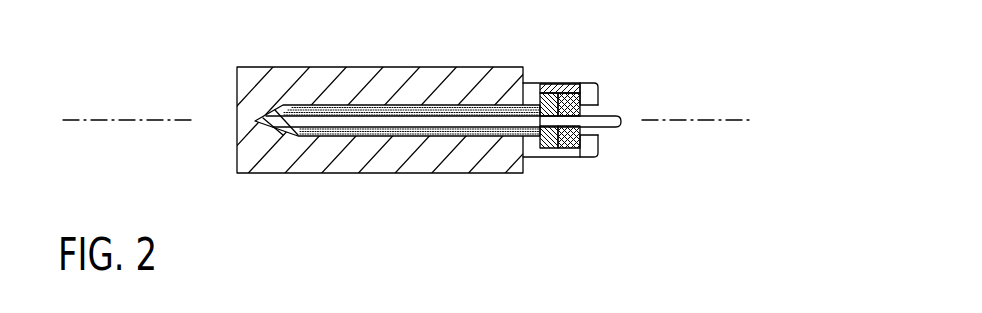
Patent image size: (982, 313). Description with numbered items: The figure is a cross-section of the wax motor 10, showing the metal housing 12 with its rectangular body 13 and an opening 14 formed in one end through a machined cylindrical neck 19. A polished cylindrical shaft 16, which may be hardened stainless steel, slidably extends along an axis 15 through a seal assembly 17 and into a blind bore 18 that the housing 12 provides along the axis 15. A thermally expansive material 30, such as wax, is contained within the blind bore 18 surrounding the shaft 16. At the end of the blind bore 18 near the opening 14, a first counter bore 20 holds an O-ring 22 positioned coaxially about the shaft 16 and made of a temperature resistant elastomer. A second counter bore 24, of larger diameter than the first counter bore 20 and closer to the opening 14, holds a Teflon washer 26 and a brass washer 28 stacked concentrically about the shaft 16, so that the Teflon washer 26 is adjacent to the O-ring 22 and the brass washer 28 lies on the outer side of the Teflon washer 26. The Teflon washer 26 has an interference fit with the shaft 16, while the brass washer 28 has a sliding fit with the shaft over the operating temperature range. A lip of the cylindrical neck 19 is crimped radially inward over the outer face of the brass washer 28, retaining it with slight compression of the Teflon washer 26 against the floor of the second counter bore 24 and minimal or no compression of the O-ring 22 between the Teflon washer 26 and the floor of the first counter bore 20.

The wax motor 10 is at (202, 44).
The metal housing 12 is at (294, 67).
The rectangular body 13 is at (417, 163).
The opening 14 is at (608, 141).
The axis 15 is at (127, 120).
The cylindrical shaft 16 is at (622, 119).
The seal assembly 17 is at (607, 104).
The blind bore 18 is at (313, 136).
The cylindrical neck 19 is at (600, 168).
The first counter bore 20 is at (545, 150).
The O-ring 22 is at (547, 86).
The second counter bore 24 is at (569, 150).
The Teflon washer 26 is at (557, 86).
The brass washer 28 is at (578, 86).
The thermally expansive material 30 is at (262, 128).